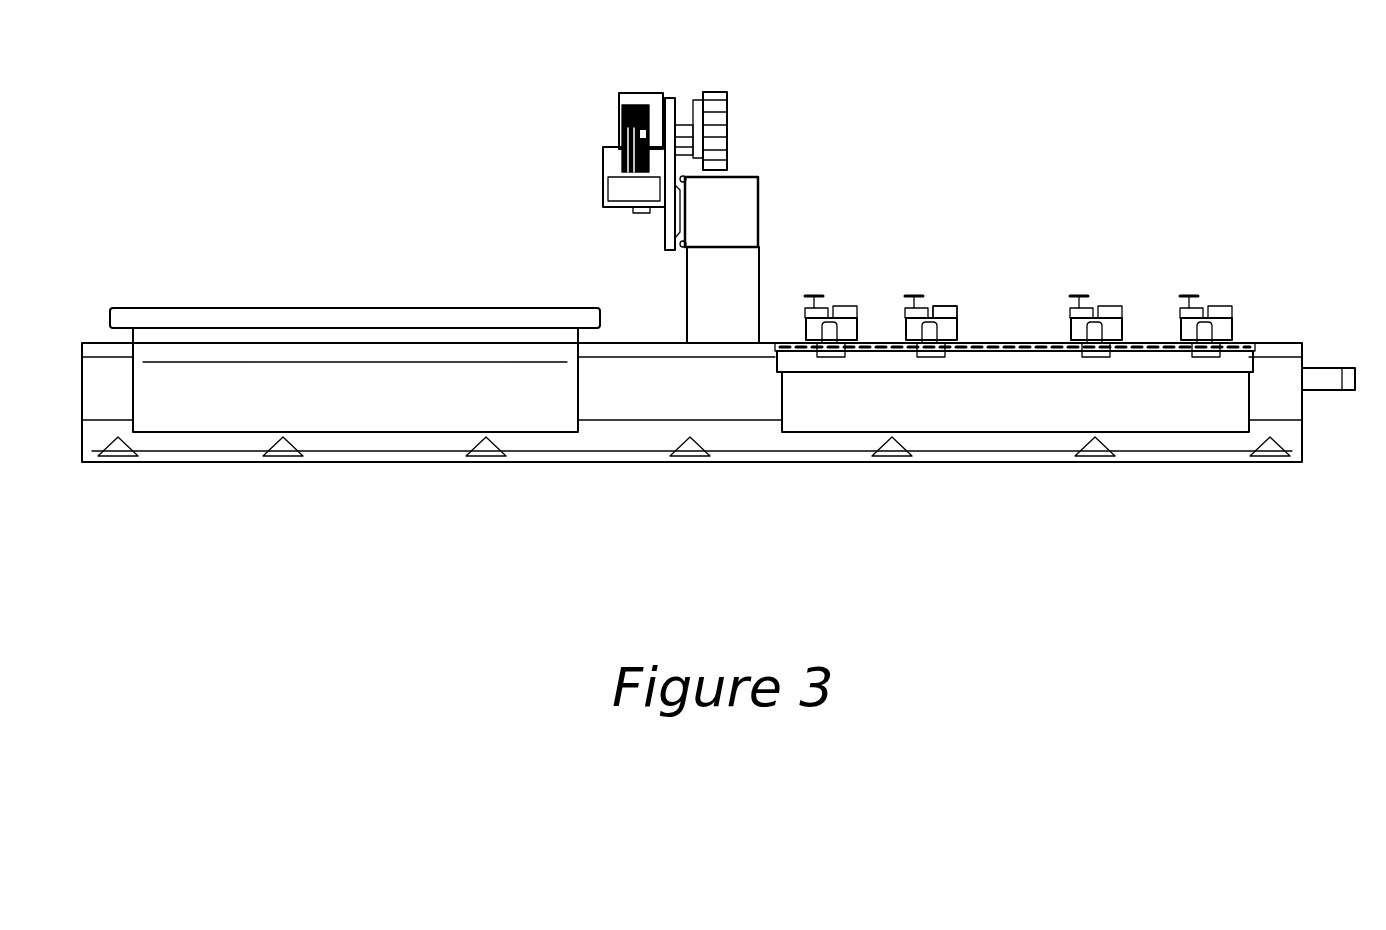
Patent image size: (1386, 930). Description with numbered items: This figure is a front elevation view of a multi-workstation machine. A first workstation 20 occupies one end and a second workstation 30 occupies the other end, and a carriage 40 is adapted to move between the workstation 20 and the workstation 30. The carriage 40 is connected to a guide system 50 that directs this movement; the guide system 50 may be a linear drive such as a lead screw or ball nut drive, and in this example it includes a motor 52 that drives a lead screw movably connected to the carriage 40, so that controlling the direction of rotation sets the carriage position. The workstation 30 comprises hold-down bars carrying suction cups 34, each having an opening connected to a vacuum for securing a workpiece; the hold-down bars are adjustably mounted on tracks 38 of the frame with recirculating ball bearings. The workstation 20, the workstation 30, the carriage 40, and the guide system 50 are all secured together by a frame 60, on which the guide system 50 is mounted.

The first workstation 20 is at (307, 308).
The second workstation 30 is at (1080, 294).
The suction cup 34 is at (945, 310).
The tracks 38 is at (1012, 351).
The carriage 40 is at (760, 205).
The guide system 50 is at (1325, 368).
The motor 52 is at (1322, 390).
The frame 60 is at (627, 462).